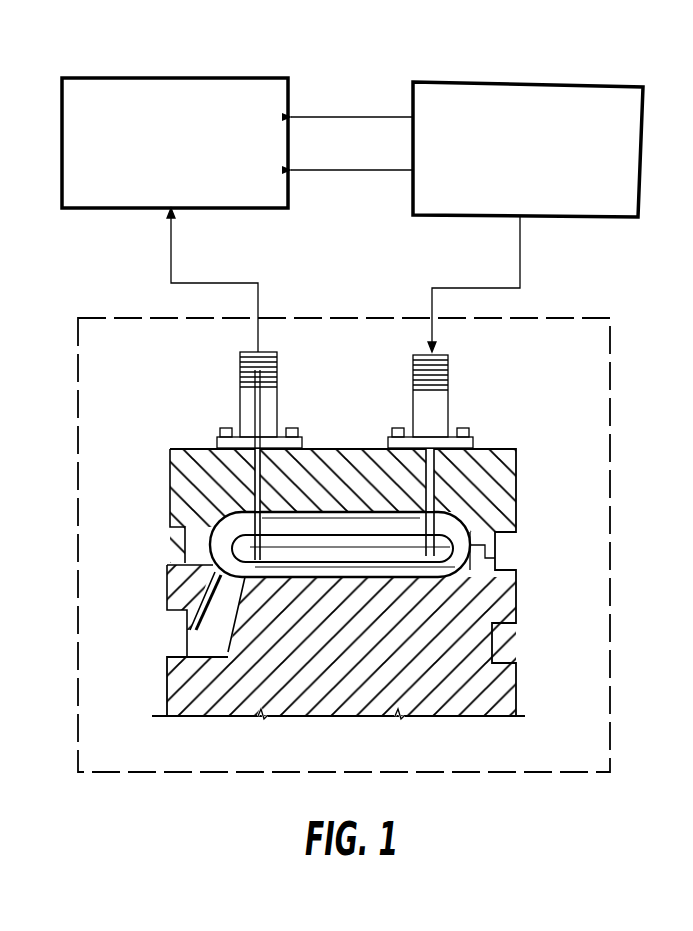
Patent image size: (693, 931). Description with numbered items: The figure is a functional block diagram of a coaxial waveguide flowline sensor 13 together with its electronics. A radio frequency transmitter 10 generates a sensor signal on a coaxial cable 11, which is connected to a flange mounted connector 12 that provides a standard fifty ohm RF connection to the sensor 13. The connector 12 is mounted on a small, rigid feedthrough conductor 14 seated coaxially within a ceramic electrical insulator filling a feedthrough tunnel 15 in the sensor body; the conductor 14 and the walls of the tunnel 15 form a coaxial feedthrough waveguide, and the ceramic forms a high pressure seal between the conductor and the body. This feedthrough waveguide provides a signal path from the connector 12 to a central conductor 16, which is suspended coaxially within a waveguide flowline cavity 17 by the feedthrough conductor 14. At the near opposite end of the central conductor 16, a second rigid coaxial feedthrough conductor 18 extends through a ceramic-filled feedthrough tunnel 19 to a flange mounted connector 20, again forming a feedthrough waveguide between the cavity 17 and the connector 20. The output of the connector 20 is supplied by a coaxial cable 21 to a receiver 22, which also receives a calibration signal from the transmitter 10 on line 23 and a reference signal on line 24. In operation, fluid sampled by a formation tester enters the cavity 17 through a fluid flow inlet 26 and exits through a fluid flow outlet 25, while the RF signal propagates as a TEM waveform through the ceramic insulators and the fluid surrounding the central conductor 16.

The radio frequency transmitter 10 is at (517, 82).
The coaxial cable 11 is at (520, 250).
The flange mounted connector 12 is at (448, 398).
The coaxial waveguide flowline sensor 13 is at (590, 320).
The feedthrough conductor 14 is at (364, 576).
The feedthrough tunnel 15 is at (443, 473).
The central conductor 16 is at (413, 563).
The waveguide flowline cavity 17 is at (442, 530).
The feedthrough conductor 18 is at (252, 482).
The feedthrough tunnel 19 is at (248, 465).
The flange mounted connector 20 is at (240, 393).
The coaxial cable 21 is at (172, 248).
The receiver 22 is at (155, 77).
The line 23 is at (335, 112).
The line 24 is at (355, 172).
The fluid flow outlet 25 is at (504, 552).
The fluid flow inlet 26 is at (190, 635).